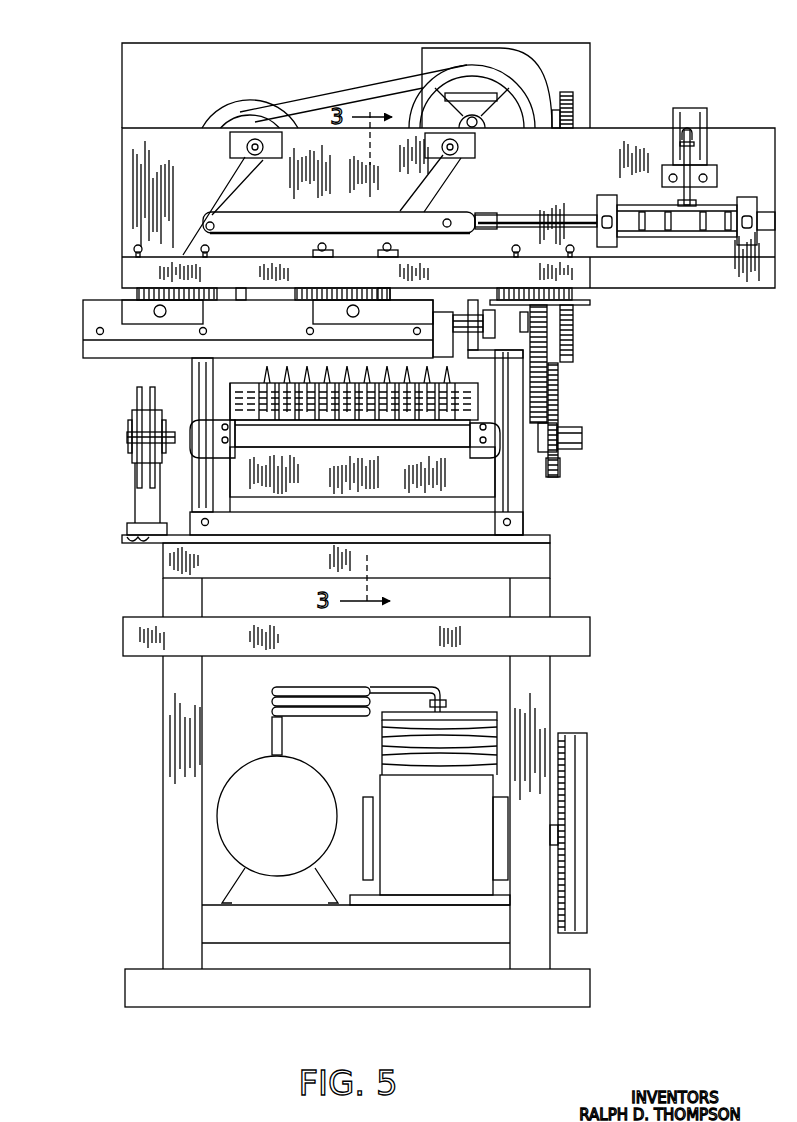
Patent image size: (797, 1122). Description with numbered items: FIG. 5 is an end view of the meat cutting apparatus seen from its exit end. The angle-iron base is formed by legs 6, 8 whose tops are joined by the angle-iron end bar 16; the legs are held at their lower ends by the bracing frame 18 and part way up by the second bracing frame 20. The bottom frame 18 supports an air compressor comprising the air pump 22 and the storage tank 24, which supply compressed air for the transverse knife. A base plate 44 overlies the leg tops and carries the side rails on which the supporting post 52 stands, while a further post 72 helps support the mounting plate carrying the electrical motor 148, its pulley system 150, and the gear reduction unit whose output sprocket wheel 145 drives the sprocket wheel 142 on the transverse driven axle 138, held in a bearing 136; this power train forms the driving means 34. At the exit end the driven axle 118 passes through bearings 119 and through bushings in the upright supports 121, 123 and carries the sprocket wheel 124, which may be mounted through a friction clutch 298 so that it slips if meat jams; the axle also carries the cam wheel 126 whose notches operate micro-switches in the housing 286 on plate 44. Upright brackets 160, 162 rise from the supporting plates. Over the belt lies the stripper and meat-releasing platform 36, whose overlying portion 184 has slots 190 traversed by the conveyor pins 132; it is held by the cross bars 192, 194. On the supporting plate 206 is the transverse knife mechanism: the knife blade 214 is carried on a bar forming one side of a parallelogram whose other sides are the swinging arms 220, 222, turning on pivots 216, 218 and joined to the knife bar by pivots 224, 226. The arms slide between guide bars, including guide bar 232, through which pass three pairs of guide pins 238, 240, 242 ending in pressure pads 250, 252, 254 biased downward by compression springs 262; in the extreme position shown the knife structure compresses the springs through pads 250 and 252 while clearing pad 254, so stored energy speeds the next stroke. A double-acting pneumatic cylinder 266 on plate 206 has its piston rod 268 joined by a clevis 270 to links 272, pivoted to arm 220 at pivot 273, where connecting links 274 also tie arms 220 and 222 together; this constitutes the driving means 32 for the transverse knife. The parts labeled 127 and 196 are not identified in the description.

The leg 6 is at (535, 700).
The leg 8 is at (175, 745).
The angle-iron end bar 16 is at (428, 565).
The bracing frame 18 is at (142, 965).
The second bracing frame 20 is at (572, 610).
The air pump 22 is at (416, 826).
The storage tank 24 is at (263, 826).
The driving means for the transverse cutting means 32 is at (680, 264).
The driving means 34 is at (542, 400).
The meat stripping and releasing means 36 is at (222, 393).
The base plate 44 is at (544, 540).
The supporting post 52 is at (500, 490).
The supporting post 72 is at (500, 306).
The axle 118 is at (135, 445).
The bearings 119 is at (200, 432).
The upright support 121 is at (185, 500).
The upright support 123 is at (520, 497).
The sprocket wheel 124 is at (558, 465).
The cam wheel 126 is at (133, 395).
The guide bar 127 is at (148, 392).
The pins 132 is at (452, 382).
The bearing 136 is at (436, 318).
The transverse driven axle 138 is at (460, 335).
The sprocket wheel 142 is at (575, 346).
The output sprocket wheel 145 is at (572, 120).
The electrical motor 148 is at (238, 107).
The pulley system 150 is at (402, 95).
The upright bracket 160 is at (467, 300).
The upright bracket 162 is at (258, 312).
The overlying portion 184 is at (315, 500).
The slots 190 is at (372, 405).
The cross-bar 192 is at (326, 447).
The cross-bar 194 is at (353, 531).
The gear 196 is at (552, 390).
The supporting plate 206 is at (145, 183).
The knife blade 214 is at (85, 348).
The pivot 216 is at (253, 150).
The pivot 218 is at (455, 158).
The swinging arm 220 is at (236, 204).
The swinging arm 222 is at (432, 195).
The pivot 224 is at (153, 311).
The pivot 226 is at (322, 292).
The guide bar 232 is at (122, 262).
The pair of slidable guide pins 238 is at (205, 248).
The pair of slidable guide pins 240 is at (385, 250).
The pair of slidable guide pins 242 is at (570, 256).
The pressure pad 250 is at (130, 293).
The pressure pad 252 is at (378, 292).
The pressure pad 254 is at (582, 303).
The compression springs 262 is at (178, 292).
The pneumatic cylinder 266 is at (718, 237).
The piston rod 268 is at (572, 222).
The clevis 270 is at (485, 215).
The link members 272 is at (310, 235).
The pivot 273 is at (208, 220).
The connecting links 274 is at (415, 236).
The housing 286 is at (128, 505).
The friction clutch 298 is at (570, 450).